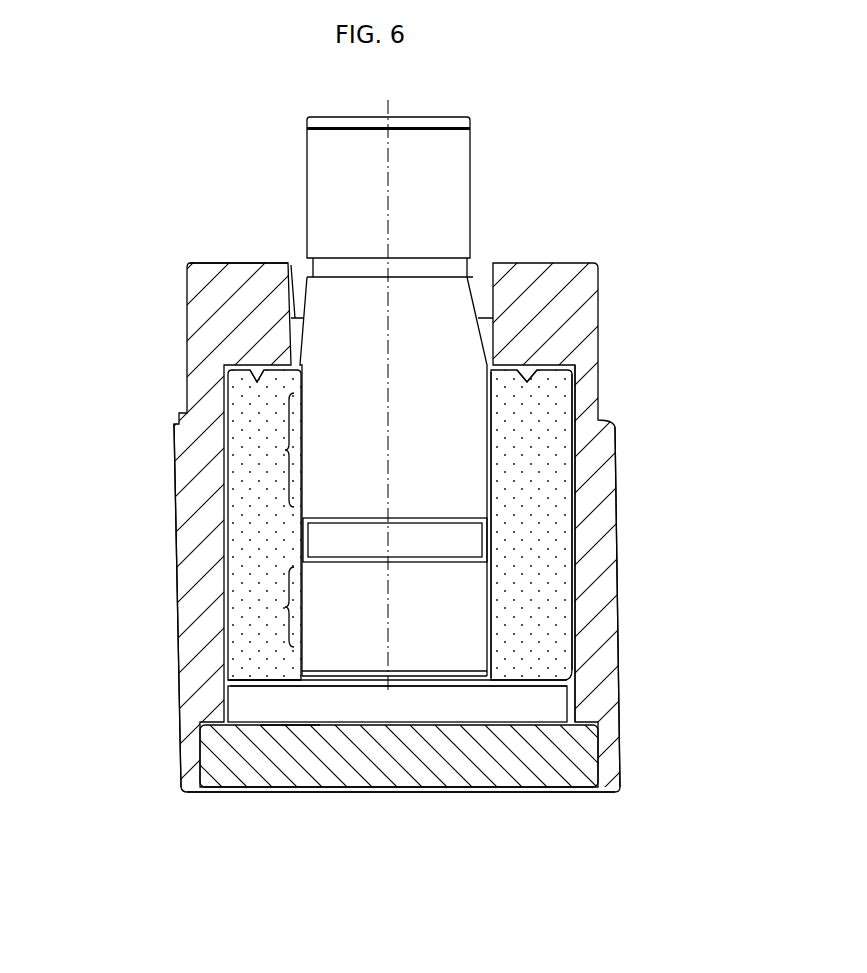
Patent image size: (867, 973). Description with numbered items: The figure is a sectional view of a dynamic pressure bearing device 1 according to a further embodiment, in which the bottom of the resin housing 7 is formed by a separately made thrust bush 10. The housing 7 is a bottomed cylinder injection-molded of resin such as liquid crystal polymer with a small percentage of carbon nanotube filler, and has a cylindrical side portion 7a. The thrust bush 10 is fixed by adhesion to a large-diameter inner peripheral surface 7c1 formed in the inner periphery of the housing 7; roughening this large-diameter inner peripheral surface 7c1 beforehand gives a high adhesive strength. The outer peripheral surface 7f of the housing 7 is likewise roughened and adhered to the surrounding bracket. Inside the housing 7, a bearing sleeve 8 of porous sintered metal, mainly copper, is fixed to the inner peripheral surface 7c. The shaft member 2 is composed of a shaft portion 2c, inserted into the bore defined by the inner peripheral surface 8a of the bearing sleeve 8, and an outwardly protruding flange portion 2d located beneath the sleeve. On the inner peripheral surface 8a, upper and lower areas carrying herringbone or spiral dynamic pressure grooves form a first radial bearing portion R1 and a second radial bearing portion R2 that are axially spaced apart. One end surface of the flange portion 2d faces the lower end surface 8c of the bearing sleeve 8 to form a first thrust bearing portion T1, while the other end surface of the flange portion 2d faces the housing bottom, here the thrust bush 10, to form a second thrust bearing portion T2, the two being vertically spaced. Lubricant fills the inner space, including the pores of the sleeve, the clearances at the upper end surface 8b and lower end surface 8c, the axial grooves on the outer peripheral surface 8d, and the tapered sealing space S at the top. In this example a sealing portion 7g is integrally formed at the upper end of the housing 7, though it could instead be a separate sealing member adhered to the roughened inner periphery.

The dynamic pressure bearing device 1 is at (613, 233).
The shaft member 2 is at (476, 171).
The shaft portion 2c is at (412, 140).
The flange portion 2d is at (550, 703).
The housing 7 is at (184, 297).
The side portion 7a is at (197, 553).
The inner peripheral surface 7c is at (575, 522).
The large-diameter inner peripheral surface 7c1 is at (573, 790).
The outer peripheral surface 7f is at (618, 622).
The sealing portion 7g is at (227, 280).
The bearing sleeve 8 is at (540, 450).
The inner peripheral surface 8a is at (487, 458).
The upper end surface 8b is at (526, 366).
The lower end surface 8c is at (258, 687).
The outer peripheral surface 8d is at (573, 585).
The thrust bush 10 is at (495, 772).
The sealing space S is at (298, 312).
The first radial bearing portion R1 is at (270, 451).
The second radial bearing portion R2 is at (270, 613).
The first thrust bearing portion T1 is at (279, 680).
The second thrust bearing portion T2 is at (288, 730).